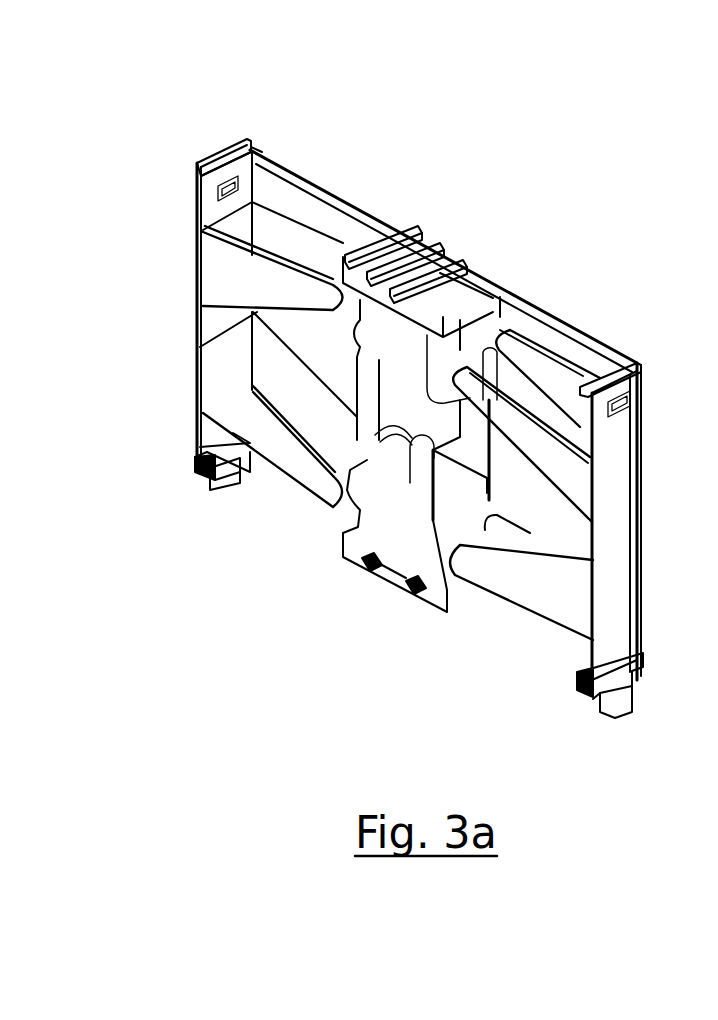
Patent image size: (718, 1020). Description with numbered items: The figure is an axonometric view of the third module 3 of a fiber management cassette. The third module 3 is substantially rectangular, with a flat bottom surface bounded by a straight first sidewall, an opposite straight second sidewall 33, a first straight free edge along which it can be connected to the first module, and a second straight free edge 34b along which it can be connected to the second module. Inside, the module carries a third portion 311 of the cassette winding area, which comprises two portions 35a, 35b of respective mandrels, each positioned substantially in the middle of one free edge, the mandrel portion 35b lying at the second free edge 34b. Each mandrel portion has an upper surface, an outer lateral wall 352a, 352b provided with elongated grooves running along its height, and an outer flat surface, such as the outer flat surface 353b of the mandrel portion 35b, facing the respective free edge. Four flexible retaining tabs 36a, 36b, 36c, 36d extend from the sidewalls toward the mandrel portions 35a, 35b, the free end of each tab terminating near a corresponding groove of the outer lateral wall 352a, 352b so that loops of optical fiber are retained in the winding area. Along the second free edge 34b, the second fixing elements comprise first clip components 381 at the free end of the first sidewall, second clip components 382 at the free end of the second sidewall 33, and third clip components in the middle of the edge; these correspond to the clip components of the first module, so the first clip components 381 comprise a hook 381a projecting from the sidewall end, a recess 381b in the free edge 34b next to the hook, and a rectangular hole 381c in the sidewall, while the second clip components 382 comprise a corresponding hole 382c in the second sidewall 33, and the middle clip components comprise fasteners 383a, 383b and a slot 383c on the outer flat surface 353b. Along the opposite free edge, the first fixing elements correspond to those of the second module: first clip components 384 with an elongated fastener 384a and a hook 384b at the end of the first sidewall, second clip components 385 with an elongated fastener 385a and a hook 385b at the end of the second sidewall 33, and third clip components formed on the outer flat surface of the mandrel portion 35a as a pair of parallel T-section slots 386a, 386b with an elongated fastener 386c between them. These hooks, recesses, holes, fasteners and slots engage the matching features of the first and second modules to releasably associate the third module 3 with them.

The third module 3 is at (220, 85).
The first clip components 381 is at (195, 148).
The hook 381a is at (246, 140).
The recess 381b is at (272, 158).
The first hole 381c is at (222, 190).
The second free edge 34b is at (358, 190).
The fastener 383a is at (400, 240).
The fastener 383b is at (450, 268).
The slot 383c is at (437, 252).
The portion of mandrel 35b is at (443, 233).
The outer flat surface 353b is at (470, 293).
The outer lateral wall 352b is at (470, 345).
The retaining tab 36d is at (530, 437).
The second clip components 382 is at (648, 355).
The second hole 382c is at (625, 408).
The second sidewall 33 is at (620, 500).
The retaining tab 36c is at (225, 272).
The third portion of the winding area 311 is at (336, 349).
The first clip components 384 is at (168, 471).
The elongated fastener 384a is at (203, 468).
The hook 384b is at (225, 480).
The retaining tab 36a is at (285, 458).
The portion of mandrel 35a is at (338, 562).
The elongated slot 386a is at (372, 570).
The elongated slot 386b is at (417, 598).
The elongated fastener 386c is at (410, 590).
The outer lateral wall 352a is at (445, 582).
The retaining tab 36b is at (530, 597).
The elongated fastener 385a is at (585, 693).
The second clip components 385 is at (598, 758).
The hook 385b is at (632, 715).